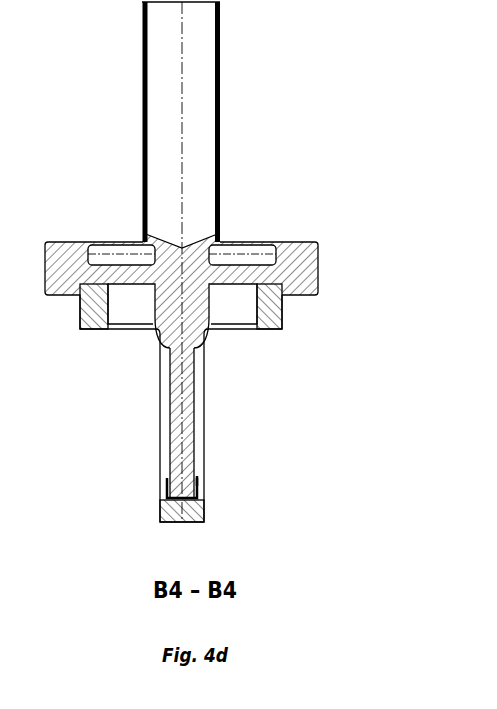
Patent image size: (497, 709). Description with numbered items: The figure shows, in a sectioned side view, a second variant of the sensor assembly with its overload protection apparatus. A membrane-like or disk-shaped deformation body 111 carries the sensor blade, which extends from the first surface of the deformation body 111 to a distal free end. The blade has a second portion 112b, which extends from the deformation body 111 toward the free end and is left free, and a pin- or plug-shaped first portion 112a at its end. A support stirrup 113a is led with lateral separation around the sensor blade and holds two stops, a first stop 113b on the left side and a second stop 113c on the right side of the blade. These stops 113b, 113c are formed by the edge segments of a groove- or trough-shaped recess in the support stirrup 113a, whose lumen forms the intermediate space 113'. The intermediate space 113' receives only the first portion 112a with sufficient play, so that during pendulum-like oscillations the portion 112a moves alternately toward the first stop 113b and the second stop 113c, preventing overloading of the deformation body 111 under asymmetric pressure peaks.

The deformation body 111 is at (235, 270).
The first portion of the sensor blade 112a is at (178, 490).
The second portion of the sensor blade 112b is at (188, 382).
The intermediate space 113' is at (238, 464).
The support stirrup 113a is at (168, 508).
The first stop 113b is at (161, 495).
The second stop 113c is at (207, 495).